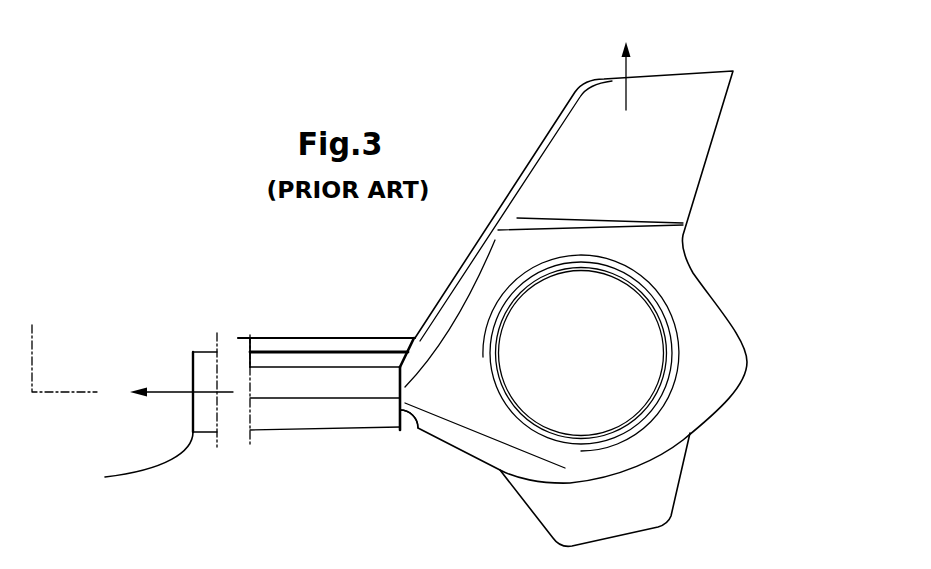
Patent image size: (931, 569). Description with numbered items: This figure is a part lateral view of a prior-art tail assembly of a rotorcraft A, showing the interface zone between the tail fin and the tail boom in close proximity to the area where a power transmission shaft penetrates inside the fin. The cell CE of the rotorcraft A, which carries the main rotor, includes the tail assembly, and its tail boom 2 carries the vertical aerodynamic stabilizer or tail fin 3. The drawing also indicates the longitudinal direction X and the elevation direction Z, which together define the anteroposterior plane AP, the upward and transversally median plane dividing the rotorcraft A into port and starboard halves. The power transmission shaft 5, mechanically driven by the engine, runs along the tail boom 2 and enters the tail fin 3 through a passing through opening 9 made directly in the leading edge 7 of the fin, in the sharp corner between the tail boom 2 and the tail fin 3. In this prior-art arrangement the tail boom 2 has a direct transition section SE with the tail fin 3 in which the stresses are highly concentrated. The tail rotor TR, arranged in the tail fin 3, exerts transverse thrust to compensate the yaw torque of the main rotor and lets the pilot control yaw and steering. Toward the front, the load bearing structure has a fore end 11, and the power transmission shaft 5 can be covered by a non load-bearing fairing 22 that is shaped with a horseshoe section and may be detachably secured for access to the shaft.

The tail boom 2 is at (290, 431).
The tail fin 3 is at (685, 172).
The power transmission shaft 5 is at (293, 352).
The leading edge 7 is at (518, 178).
The passing through opening 9 is at (405, 325).
The fore end 11 is at (193, 408).
The non load-bearing fairing 22 is at (358, 338).
The rotorcraft A is at (266, 245).
The anteroposterior plane AP is at (73, 378).
The longitudinal direction X is at (181, 373).
The elevation direction Z is at (625, 60).
The cell CE is at (138, 476).
The transition section SE is at (410, 420).
The tail rotor TR is at (635, 373).